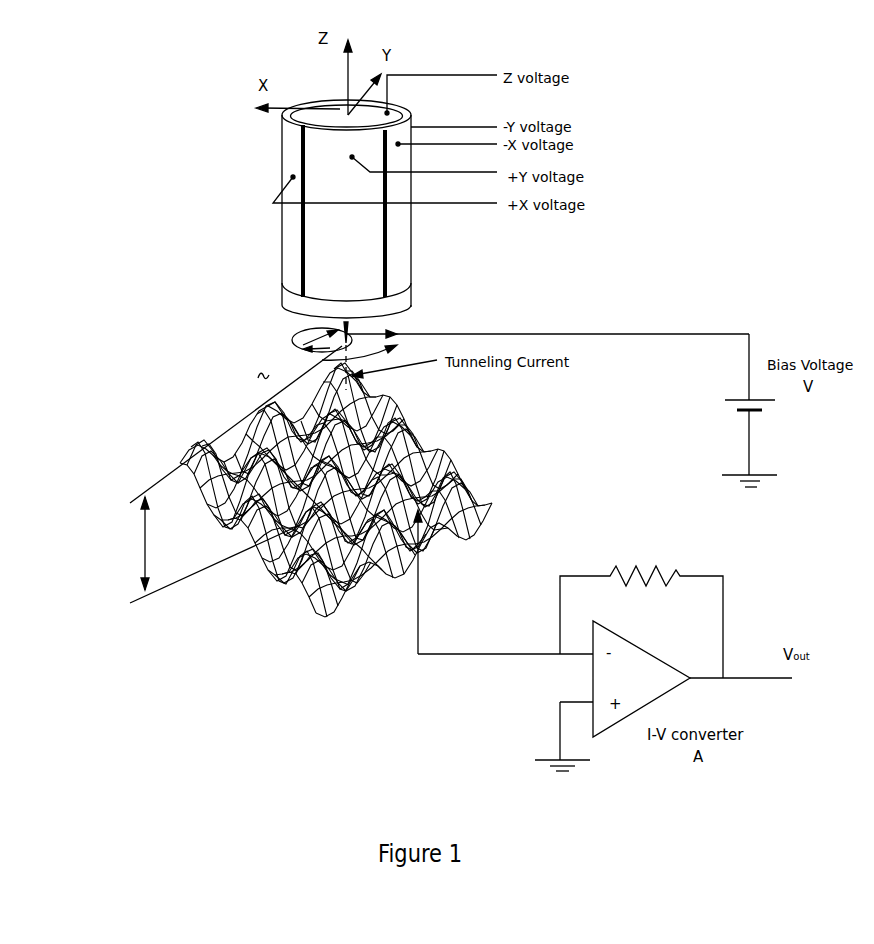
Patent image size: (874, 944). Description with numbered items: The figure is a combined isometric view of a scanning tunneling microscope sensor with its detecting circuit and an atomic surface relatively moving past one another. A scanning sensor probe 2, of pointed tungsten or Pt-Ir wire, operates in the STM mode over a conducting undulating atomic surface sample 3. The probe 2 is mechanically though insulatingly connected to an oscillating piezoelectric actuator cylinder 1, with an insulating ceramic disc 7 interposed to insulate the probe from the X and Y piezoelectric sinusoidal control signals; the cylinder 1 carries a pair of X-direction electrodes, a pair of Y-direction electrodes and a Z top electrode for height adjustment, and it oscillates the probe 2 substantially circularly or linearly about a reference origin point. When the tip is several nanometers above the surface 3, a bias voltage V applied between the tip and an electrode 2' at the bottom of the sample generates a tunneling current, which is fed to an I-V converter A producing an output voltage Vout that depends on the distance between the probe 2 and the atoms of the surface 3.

The piezoelectric actuator cylinder 1 is at (416, 236).
The insulating ceramic disc 7 is at (397, 305).
The scanning sensor probe 2 is at (258, 356).
The electrode 2' is at (381, 582).
The atomic surface sample 3 is at (452, 417).